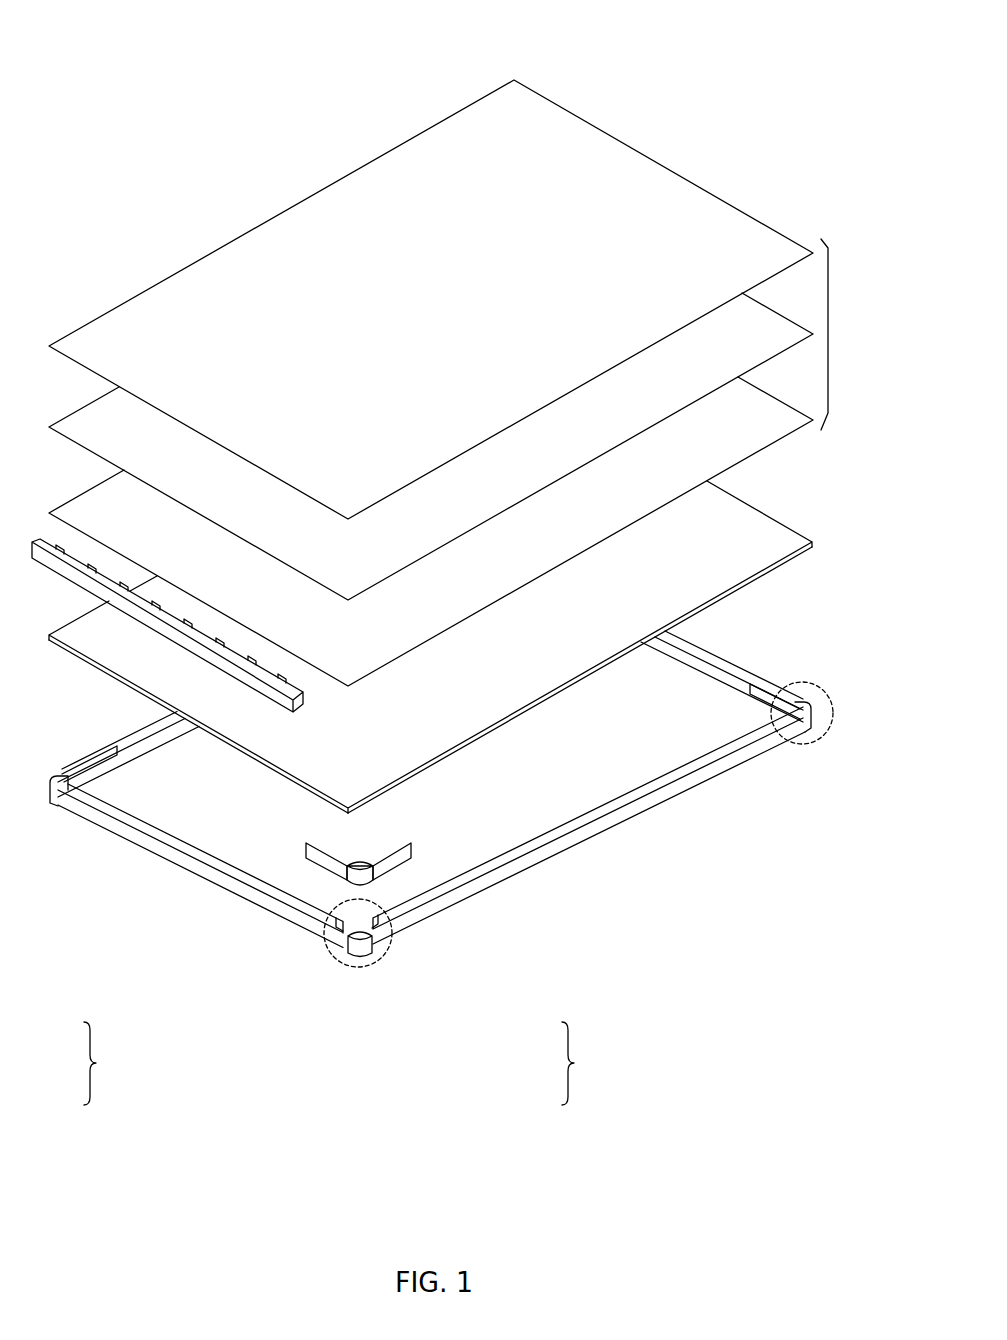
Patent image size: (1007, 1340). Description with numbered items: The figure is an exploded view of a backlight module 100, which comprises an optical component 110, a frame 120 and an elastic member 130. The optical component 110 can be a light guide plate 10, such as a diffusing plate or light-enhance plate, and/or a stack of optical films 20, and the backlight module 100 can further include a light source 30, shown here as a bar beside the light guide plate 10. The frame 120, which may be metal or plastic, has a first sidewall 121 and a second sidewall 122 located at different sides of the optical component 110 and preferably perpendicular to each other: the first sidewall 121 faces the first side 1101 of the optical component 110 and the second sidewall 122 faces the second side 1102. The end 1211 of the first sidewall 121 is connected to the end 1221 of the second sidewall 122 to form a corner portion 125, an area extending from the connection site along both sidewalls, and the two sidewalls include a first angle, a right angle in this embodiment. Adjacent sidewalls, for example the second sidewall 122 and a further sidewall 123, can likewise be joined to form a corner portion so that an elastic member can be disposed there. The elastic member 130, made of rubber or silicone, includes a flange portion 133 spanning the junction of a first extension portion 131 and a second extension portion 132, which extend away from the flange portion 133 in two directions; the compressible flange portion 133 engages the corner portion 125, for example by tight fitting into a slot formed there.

The backlight module 100 is at (178, 34).
The optical component 110 is at (95, 1063).
The light guide plate 10 is at (446, 647).
The first side 1101 is at (73, 652).
The second side 1102 is at (805, 548).
The optical films 20 is at (461, 383).
The light source 30 is at (45, 560).
The frame 120 is at (453, 875).
The first sidewall 121 is at (200, 867).
The second sidewall 122 is at (645, 800).
The sidewall 123 is at (727, 659).
The corner portion 125 is at (818, 737).
The end of the first sidewall 1211 is at (340, 950).
The end of the second sidewall 1221 is at (373, 947).
The elastic member 130 is at (551, 885).
The first extension portion 131 is at (307, 852).
The second extension portion 132 is at (412, 850).
The flange portion 133 is at (343, 873).